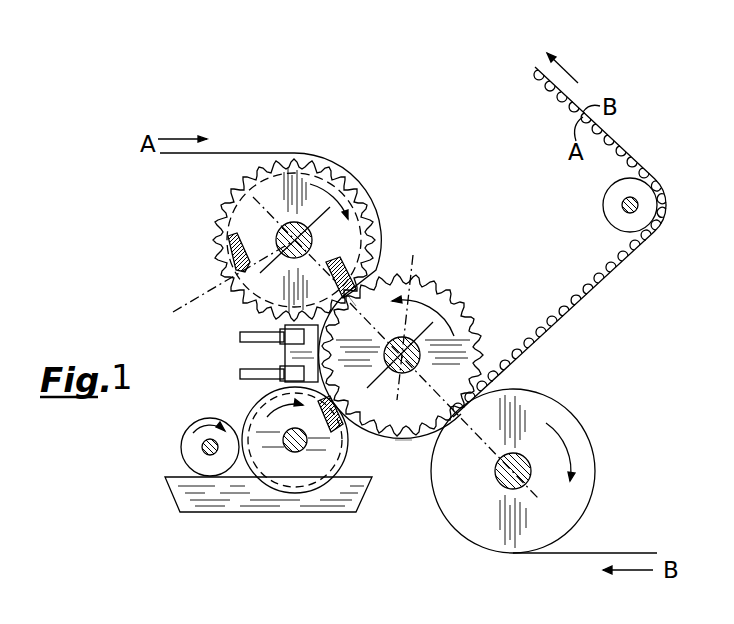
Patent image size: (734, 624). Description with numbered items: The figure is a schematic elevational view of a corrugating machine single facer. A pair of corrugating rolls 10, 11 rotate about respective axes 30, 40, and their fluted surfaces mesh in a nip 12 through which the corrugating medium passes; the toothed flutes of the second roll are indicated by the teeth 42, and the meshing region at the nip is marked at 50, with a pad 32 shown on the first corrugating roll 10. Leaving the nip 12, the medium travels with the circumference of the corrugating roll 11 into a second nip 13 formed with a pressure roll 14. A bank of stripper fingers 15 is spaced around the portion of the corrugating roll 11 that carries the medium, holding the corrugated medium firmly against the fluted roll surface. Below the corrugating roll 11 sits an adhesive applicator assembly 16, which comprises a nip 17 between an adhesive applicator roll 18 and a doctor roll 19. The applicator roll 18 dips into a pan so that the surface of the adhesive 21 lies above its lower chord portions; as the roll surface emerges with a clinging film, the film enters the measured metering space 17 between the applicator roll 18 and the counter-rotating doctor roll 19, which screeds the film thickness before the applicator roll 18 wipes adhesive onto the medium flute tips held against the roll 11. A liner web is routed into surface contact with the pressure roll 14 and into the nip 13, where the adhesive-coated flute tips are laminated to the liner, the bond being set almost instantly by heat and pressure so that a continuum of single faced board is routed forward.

The corrugating roll 10 is at (218, 236).
The corrugating roll 11 is at (430, 370).
The nip 12 is at (377, 272).
The nip 13 is at (482, 380).
The pressure roll 14 is at (573, 519).
The stripper fingers 15 is at (403, 441).
The adhesive applicator assembly 16 is at (267, 524).
The nip 17 is at (239, 430).
The adhesive applicator roll 18 is at (270, 398).
The doctor roll 19 is at (182, 450).
The adhesive 21 is at (166, 477).
The axis 30 is at (309, 243).
The pad 32 is at (193, 300).
The axis 40 is at (422, 351).
The teeth of second drum 42 is at (416, 261).
The nip 50 is at (352, 300).